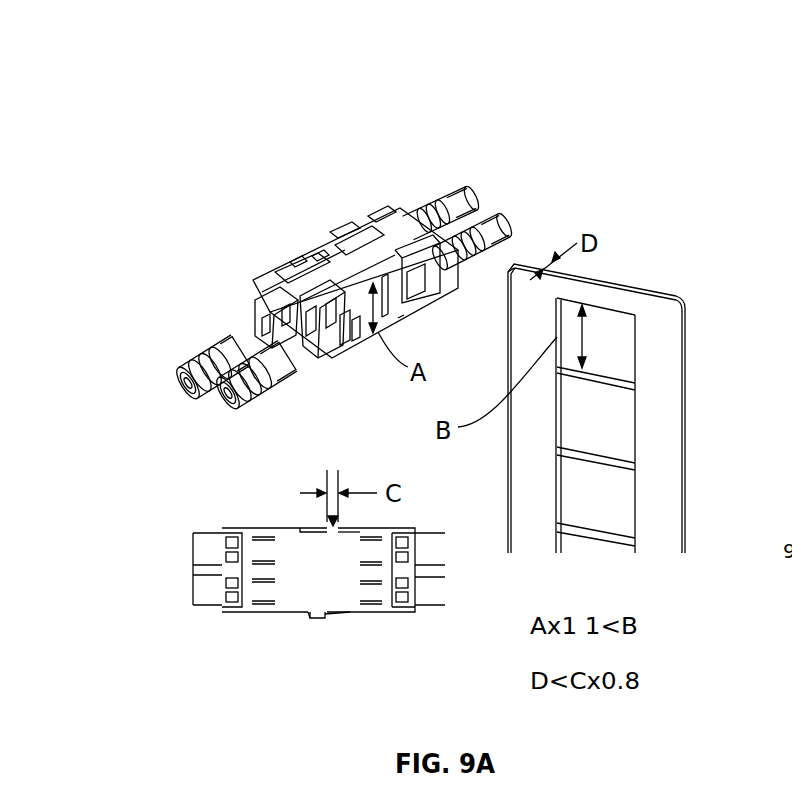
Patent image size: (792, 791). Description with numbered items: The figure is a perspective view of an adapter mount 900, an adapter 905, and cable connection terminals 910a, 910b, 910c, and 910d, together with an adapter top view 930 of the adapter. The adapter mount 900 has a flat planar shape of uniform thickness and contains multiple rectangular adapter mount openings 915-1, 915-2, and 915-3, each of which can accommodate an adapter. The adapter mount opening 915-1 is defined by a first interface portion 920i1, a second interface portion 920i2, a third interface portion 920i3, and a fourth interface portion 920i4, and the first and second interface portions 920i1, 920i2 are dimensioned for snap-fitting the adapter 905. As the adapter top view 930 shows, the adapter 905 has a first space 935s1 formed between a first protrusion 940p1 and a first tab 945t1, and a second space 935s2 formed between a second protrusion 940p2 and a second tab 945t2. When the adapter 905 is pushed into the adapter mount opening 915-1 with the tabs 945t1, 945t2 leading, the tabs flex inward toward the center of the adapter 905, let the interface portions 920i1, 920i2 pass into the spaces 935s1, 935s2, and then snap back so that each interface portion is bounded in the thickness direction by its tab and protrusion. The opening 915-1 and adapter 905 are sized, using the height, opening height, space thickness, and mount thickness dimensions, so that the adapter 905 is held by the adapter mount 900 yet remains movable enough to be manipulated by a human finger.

The adapter 905 is at (332, 242).
The cable connection terminal 910a is at (303, 367).
The cable connection terminal 910b is at (238, 327).
The cable connection terminal 910c is at (470, 252).
The cable connection terminal 910d is at (423, 227).
The second space 935s2 is at (402, 323).
The first space 935s1 is at (320, 510).
The adapter mount 900 is at (660, 312).
The fourth interface portion 920i4 is at (607, 305).
The second interface portion 920i2 is at (637, 335).
The first interface portion 920i1 is at (557, 317).
The third interface portion 920i3 is at (627, 383).
The adapter mount opening 915-1 is at (617, 360).
The adapter mount opening 915-2 is at (597, 442).
The adapter mount opening 915-3 is at (608, 512).
The adapter top view 930 is at (286, 626).
The first protrusion 940p1 is at (308, 528).
The second protrusion 940p2 is at (320, 618).
The first tab 945t1 is at (360, 522).
The second tab 945t2 is at (337, 620).